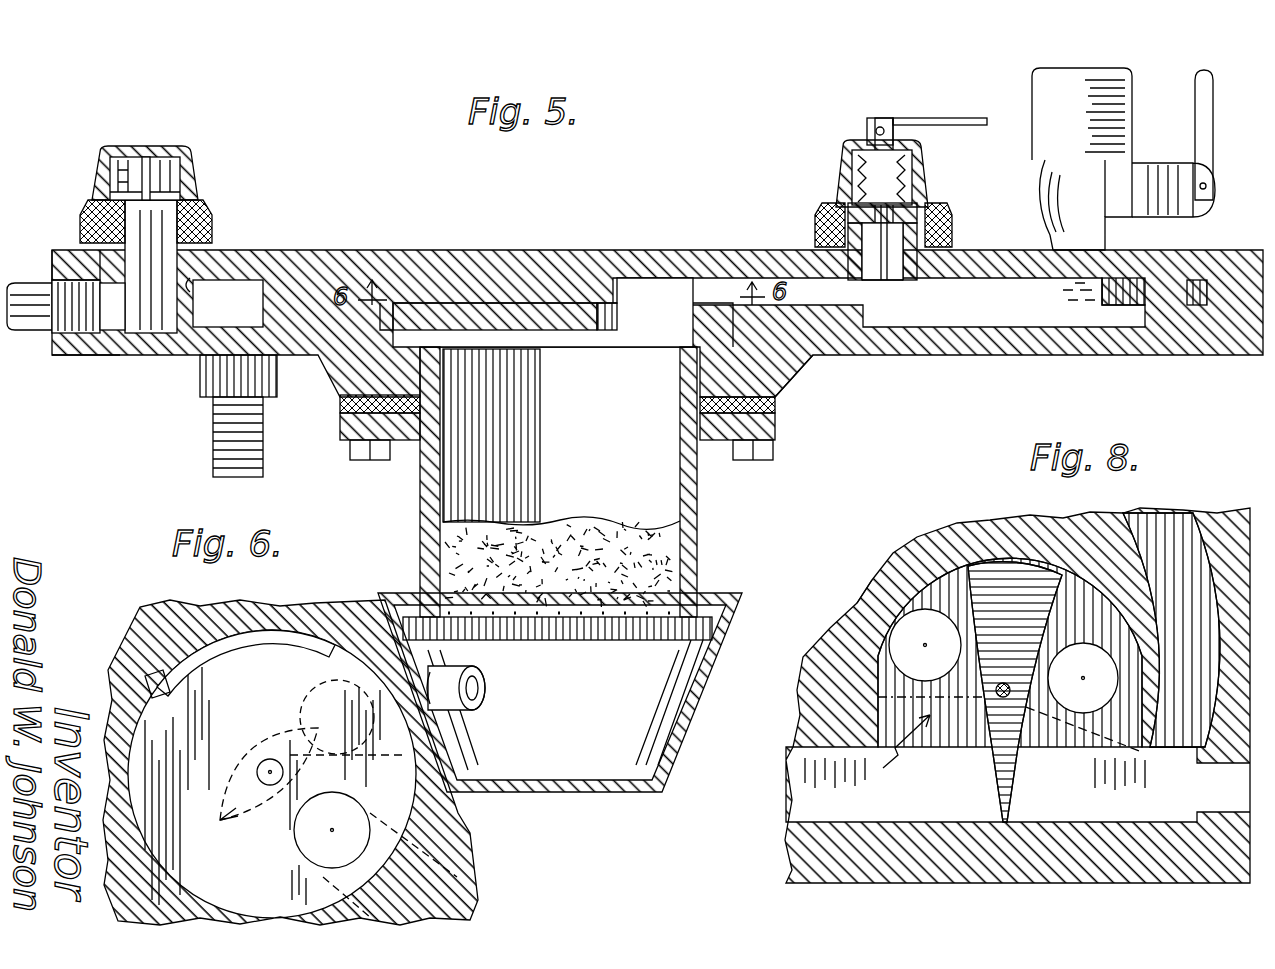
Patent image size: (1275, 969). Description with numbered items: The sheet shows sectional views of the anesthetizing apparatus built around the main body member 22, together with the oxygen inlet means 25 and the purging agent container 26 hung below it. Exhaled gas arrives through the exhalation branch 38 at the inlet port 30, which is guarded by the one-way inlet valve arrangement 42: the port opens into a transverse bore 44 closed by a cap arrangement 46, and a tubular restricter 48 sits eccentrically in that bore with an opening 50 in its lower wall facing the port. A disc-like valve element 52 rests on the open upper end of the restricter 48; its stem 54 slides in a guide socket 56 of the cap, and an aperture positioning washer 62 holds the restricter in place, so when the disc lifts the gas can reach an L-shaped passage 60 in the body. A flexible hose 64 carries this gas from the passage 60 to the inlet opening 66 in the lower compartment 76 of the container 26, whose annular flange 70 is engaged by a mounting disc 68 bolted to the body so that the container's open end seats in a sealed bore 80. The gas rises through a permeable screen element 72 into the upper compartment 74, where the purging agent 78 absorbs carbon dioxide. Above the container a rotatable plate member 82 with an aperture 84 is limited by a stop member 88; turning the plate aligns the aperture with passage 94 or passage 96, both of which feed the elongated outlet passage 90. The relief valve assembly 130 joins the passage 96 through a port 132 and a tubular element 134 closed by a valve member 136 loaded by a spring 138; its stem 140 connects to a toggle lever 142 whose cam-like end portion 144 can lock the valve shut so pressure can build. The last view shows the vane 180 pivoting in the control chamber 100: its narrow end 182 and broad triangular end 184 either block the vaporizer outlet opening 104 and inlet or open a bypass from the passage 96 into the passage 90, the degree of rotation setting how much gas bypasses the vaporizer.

In FIG. 5, the main body member 22 is at (277, 250).
In FIG. 5, the oxygen inlet means 25 is at (1226, 138).
In FIG. 5, the purging agent container 26 is at (735, 526).
In FIG. 5, the inlet port 30 is at (82, 340).
In FIG. 5, the exhalation branch 38 is at (30, 332).
In FIG. 5, the one-way inlet valve arrangement 42 is at (186, 168).
In FIG. 5, the transverse passage or bore 44 is at (215, 282).
In FIG. 5, the cap arrangement 46 is at (128, 150).
In FIG. 5, the tubular restricter or deflector member 48 is at (158, 333).
In FIG. 5, the opening 50 is at (62, 270).
In FIG. 5, the disc-like valve element 52 is at (118, 180).
In FIG. 5, the stem 54 is at (165, 188).
In FIG. 5, the guide socket 56 is at (158, 172).
In FIG. 5, the L-shaped passage 60 is at (193, 278).
In FIG. 5, the aperture positioning washer 62 is at (212, 215).
In FIG. 5, the flexible hose 64 is at (215, 438).
In FIG. 5, the inlet opening 66 is at (486, 689).
In FIG. 5, the washer 68 is at (778, 420).
In FIG. 5, the annular flange 70 is at (778, 406).
In FIG. 5, the permeable screen element 72 is at (700, 580).
In FIG. 5, the upper compartment 74 is at (672, 468).
In FIG. 5, the lower compartment 76 is at (672, 702).
In FIG. 5, the purging agent 78 is at (447, 535).
In FIG. 5, the bore 80 is at (800, 364).
In FIG. 5, the rotatable plate member 82 is at (493, 300).
In FIG. 6, the rotatable plate member 82 is at (176, 770).
In FIG. 5, the aperture 84 is at (622, 318).
In FIG. 6, the stop member 88 is at (125, 668).
In FIG. 8, the elongated outlet passage 90 is at (790, 802).
In FIG. 6, the passage 94 is at (465, 873).
In FIG. 6, the passage 96 is at (353, 677).
In FIG. 8, the chamber 100 is at (883, 768).
In FIG. 8, the outlet opening 104 is at (866, 608).
In FIG. 5, the relief valve assembly 130 is at (902, 194).
In FIG. 5, the port 132 is at (905, 285).
In FIG. 5, the tubular element 134 is at (952, 224).
In FIG. 5, the valve member 136 is at (845, 196).
In FIG. 5, the spring 138 is at (925, 175).
In FIG. 5, the stem 140 is at (868, 147).
In FIG. 5, the toggle lever 142 is at (948, 118).
In FIG. 5, the cam-like end portion 144 is at (877, 118).
In FIG. 8, the vane 180 is at (1023, 634).
In FIG. 8, the narrow end 182 is at (1118, 672).
In FIG. 8, the broad triangular end 184 is at (1003, 582).